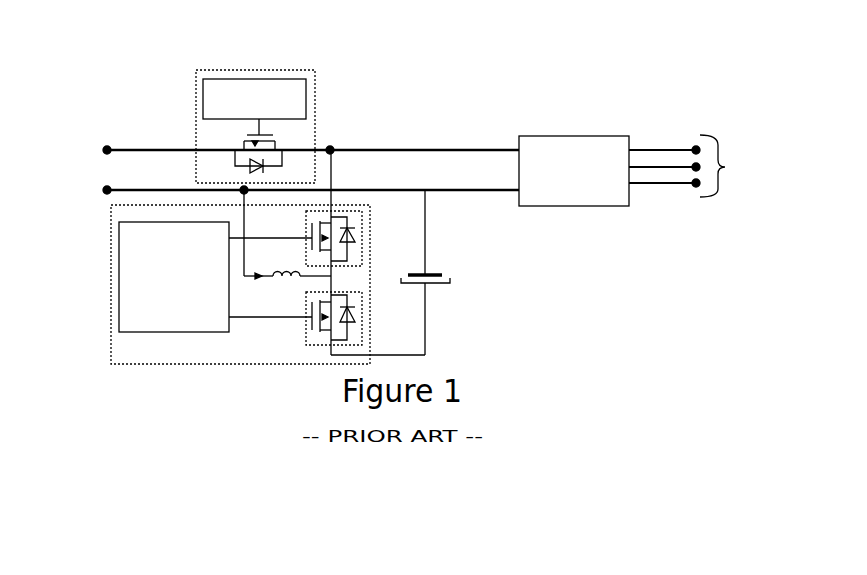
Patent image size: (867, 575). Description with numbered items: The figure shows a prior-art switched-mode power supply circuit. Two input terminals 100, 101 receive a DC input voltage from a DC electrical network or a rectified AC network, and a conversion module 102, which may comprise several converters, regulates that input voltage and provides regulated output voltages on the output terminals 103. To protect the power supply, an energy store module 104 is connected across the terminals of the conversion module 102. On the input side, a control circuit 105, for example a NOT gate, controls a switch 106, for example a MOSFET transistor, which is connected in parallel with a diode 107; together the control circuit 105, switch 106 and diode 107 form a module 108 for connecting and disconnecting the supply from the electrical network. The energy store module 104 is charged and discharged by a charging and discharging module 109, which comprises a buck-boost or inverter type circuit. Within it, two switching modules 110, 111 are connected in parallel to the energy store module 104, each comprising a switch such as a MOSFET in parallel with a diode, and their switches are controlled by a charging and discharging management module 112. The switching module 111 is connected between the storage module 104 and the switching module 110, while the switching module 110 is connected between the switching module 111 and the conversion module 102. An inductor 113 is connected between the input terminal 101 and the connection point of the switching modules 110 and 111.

The input terminal 100 is at (109, 146).
The input terminal 101 is at (104, 192).
The conversion module 102 is at (558, 137).
The output terminals 103 is at (725, 167).
The energy store module 104 is at (433, 285).
The control circuit 105 is at (303, 92).
The switch 106 is at (253, 137).
The diode 107 is at (249, 172).
The module for connecting and disconnecting the supply 108 is at (303, 53).
The charging and discharging module 109 is at (112, 311).
The switching module 110 is at (363, 230).
The switching module 111 is at (305, 327).
The charging and discharging management module 112 is at (180, 332).
The inductor 113 is at (287, 285).